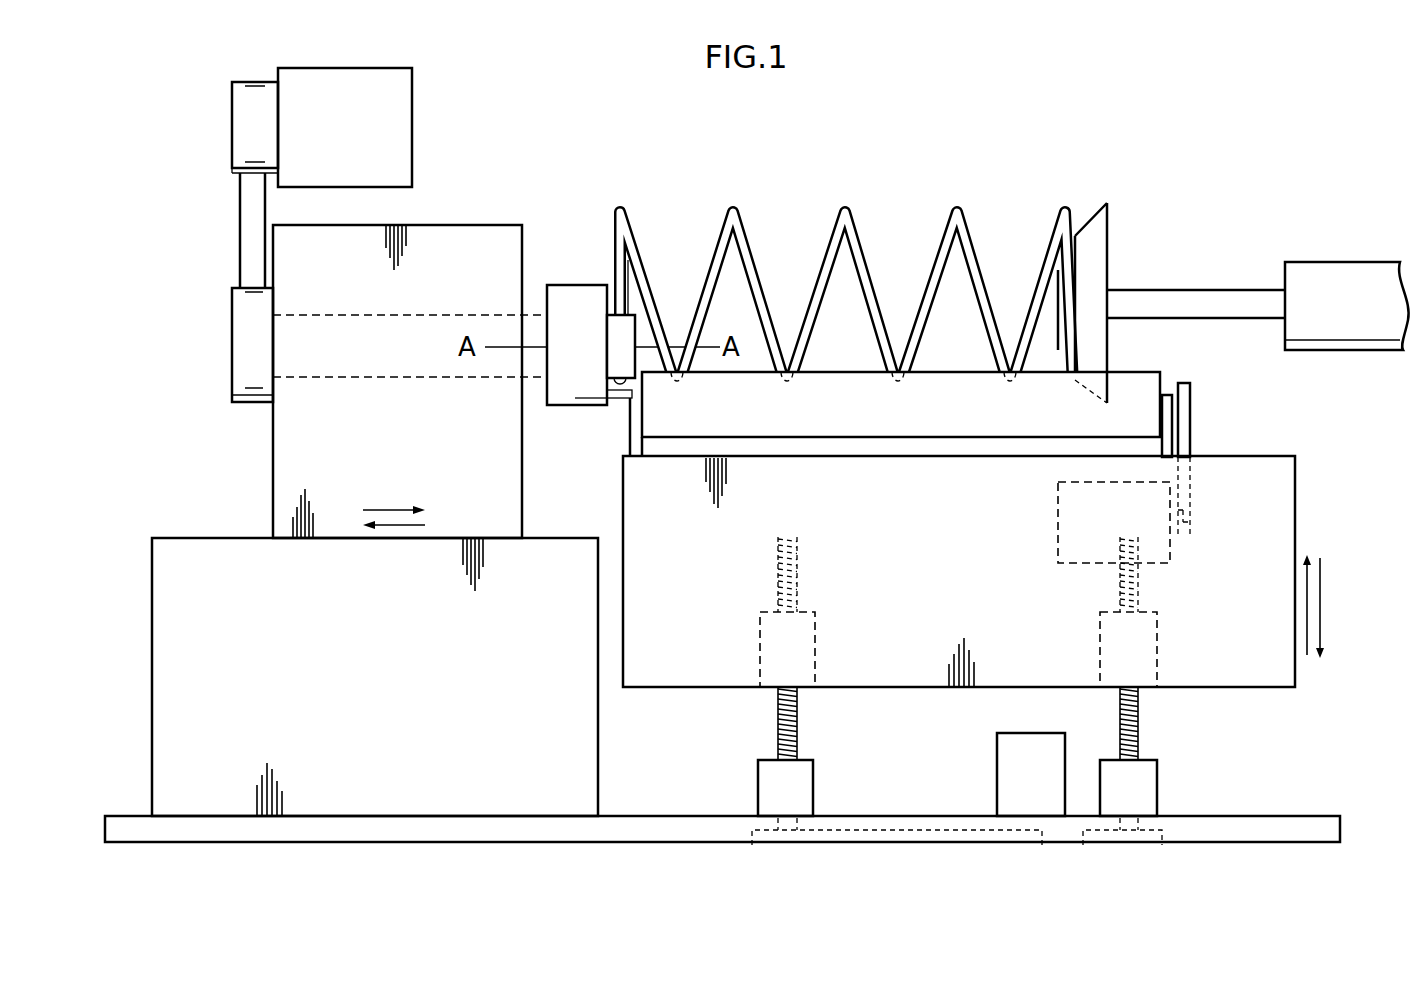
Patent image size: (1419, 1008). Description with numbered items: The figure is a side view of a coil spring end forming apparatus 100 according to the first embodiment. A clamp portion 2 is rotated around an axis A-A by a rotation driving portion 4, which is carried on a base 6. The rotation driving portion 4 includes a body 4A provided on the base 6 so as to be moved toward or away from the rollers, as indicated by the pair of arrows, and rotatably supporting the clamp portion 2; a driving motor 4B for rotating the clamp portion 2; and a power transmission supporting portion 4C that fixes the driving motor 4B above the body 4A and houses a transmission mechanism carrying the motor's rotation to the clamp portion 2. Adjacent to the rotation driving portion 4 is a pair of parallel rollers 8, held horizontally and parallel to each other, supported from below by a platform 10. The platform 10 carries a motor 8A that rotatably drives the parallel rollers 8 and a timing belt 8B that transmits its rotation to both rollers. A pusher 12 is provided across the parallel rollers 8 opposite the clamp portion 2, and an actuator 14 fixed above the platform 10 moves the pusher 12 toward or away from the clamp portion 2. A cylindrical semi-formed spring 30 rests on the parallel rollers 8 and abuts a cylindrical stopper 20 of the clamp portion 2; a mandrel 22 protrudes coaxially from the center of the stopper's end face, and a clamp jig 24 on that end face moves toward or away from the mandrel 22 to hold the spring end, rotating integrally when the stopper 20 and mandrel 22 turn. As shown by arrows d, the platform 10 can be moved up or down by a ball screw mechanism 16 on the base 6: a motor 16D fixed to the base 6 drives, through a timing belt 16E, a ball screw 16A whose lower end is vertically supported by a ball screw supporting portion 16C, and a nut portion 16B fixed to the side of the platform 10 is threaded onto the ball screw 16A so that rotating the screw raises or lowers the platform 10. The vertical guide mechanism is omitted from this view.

The coil spring end forming apparatus 100 is at (876, 165).
The clamp portion 2 is at (564, 283).
The rotation driving portion 4 is at (459, 226).
The body 4A is at (378, 453).
The driving motor 4B is at (326, 142).
The power transmission supporting portion 4C is at (240, 230).
The base 6 is at (382, 661).
The parallel rollers 8 is at (847, 372).
The motor 8A is at (1058, 519).
The timing belt 8B is at (1190, 413).
The platform 10 is at (1296, 510).
The pusher 12 is at (1108, 230).
The actuator 14 is at (1355, 262).
The ball screw mechanism 16 is at (993, 718).
The ball screw 16A is at (799, 746).
The nut portion 16B is at (816, 641).
The ball screw supporting portion 16C is at (813, 789).
The motor 16D is at (997, 777).
The timing belt 16E is at (937, 845).
The cylindrical stopper 20 is at (557, 408).
The mandrel 22 is at (633, 332).
The clamp jig 24 is at (617, 400).
The semi-formed spring 30 is at (858, 256).